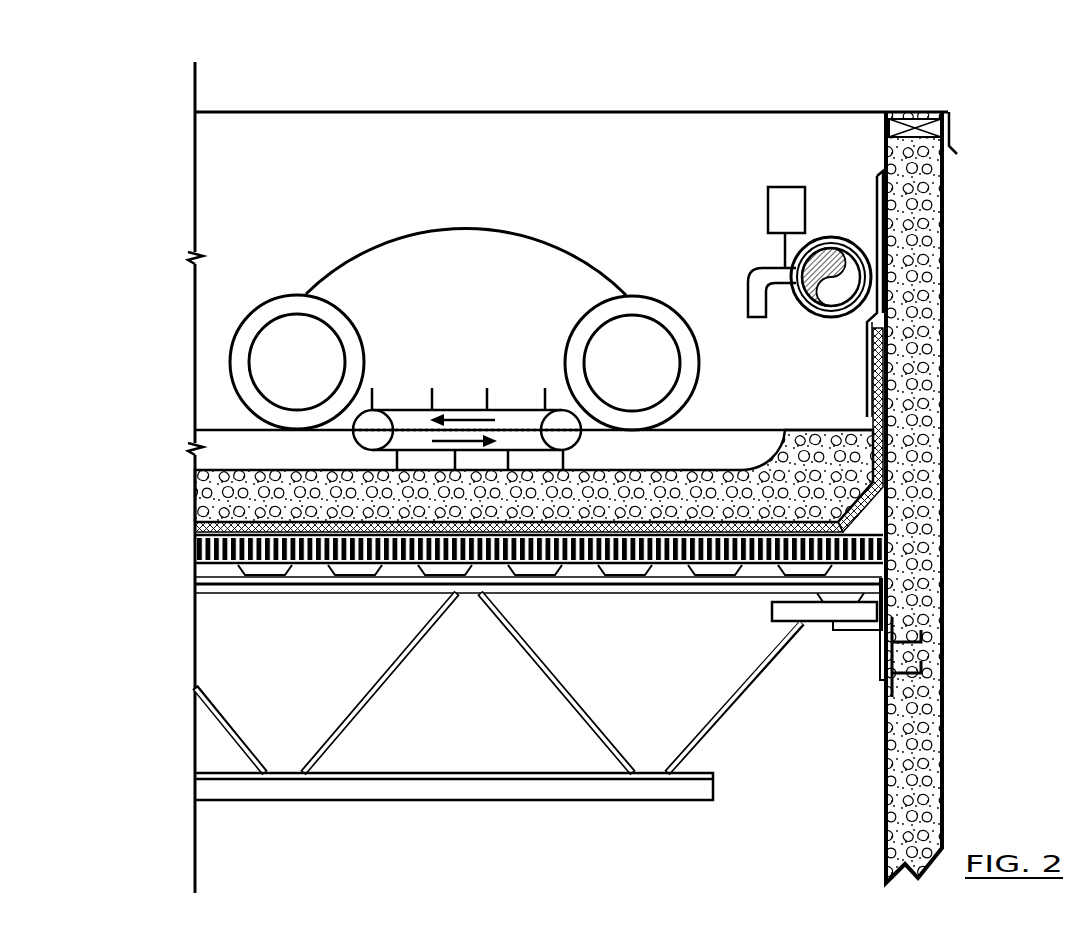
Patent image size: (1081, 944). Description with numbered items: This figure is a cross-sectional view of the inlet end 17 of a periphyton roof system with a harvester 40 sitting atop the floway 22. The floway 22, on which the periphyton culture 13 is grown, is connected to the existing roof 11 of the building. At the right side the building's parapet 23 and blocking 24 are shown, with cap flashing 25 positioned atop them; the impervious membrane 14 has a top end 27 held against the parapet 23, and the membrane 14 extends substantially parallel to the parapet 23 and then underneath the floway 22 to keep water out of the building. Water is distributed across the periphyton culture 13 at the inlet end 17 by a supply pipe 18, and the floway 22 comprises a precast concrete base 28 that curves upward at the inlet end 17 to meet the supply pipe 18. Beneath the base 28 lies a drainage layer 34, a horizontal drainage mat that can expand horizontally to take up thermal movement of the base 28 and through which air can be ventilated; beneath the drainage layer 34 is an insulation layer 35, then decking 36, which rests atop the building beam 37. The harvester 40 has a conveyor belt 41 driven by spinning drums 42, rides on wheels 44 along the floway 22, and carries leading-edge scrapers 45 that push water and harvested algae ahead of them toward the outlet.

The roof 11 is at (745, 593).
The periphyton culture 13 is at (295, 470).
The membrane 14 is at (884, 480).
The inlet end 17 is at (926, 390).
The supply pipe 18 is at (859, 244).
The floway 22 is at (172, 480).
The parapet 23 is at (926, 243).
The blocking 24 is at (947, 132).
The cap flashing 25 is at (893, 112).
The top end 27 is at (881, 216).
The precast concrete base 28 is at (875, 191).
The drainage layer 34 is at (195, 528).
The insulation layer 35 is at (200, 549).
The decking 36 is at (240, 566).
The building beam 37 is at (541, 595).
The harvester 40 is at (553, 70).
The conveyor belt 41 is at (451, 408).
The spinning drums 42 is at (378, 421).
The wheels 44 is at (628, 296).
The leading-edge scrapers 45 is at (360, 446).